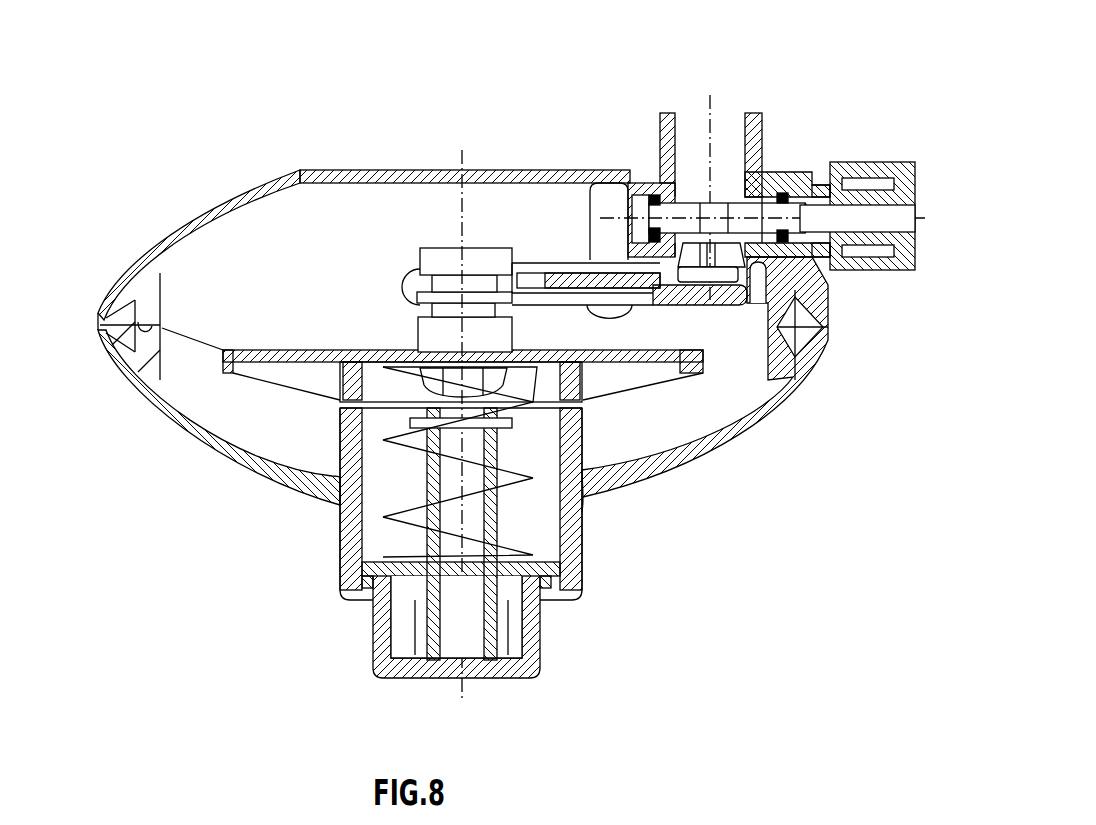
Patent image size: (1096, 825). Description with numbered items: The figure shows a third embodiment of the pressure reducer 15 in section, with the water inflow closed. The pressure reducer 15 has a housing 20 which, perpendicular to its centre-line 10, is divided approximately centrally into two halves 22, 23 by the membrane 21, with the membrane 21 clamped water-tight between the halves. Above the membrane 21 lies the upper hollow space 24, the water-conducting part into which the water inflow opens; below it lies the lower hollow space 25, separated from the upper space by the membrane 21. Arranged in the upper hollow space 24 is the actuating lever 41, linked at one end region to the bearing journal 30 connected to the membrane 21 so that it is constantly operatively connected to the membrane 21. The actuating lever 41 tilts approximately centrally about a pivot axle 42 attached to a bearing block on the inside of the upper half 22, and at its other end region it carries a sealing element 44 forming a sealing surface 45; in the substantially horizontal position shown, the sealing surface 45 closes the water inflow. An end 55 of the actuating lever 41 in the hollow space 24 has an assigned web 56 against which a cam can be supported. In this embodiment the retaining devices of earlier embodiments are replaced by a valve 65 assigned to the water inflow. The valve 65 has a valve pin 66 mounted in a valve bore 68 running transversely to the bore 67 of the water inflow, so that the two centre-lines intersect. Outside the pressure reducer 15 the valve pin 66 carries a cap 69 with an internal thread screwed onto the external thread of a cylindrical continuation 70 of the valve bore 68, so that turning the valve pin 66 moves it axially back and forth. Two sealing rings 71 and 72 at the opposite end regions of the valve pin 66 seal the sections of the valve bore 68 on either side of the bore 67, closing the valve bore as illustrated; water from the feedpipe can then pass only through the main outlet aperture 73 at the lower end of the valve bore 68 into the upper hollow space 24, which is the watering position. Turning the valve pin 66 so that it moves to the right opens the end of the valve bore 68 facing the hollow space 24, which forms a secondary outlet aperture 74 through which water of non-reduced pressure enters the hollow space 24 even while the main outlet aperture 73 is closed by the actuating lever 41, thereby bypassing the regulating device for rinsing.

The centre-line 10 is at (460, 690).
The pressure reducer 15 is at (147, 178).
The housing 20 is at (257, 172).
The membrane 21 is at (190, 343).
The upper half 22 is at (400, 178).
The lower half 23 is at (230, 437).
The upper hollow space 24 is at (292, 297).
The lower hollow space 25 is at (292, 433).
The bearing journal 30 is at (430, 255).
The actuating lever 41 is at (555, 265).
The pivot axle 42 is at (590, 273).
The sealing element 44 is at (660, 295).
The sealing surface 45 is at (660, 295).
The end of the actuating lever 55 is at (760, 300).
The web 56 is at (752, 320).
The valve 65 is at (817, 157).
The valve pin 66 is at (727, 215).
The bore 67 is at (685, 130).
The valve bore 68 is at (750, 245).
The cap 69 is at (882, 162).
The cylindrical continuation 70 is at (807, 257).
The sealing ring 71 is at (650, 258).
The sealing ring 72 is at (780, 200).
The main outlet aperture 73 is at (720, 170).
The secondary outlet aperture 74 is at (605, 196).